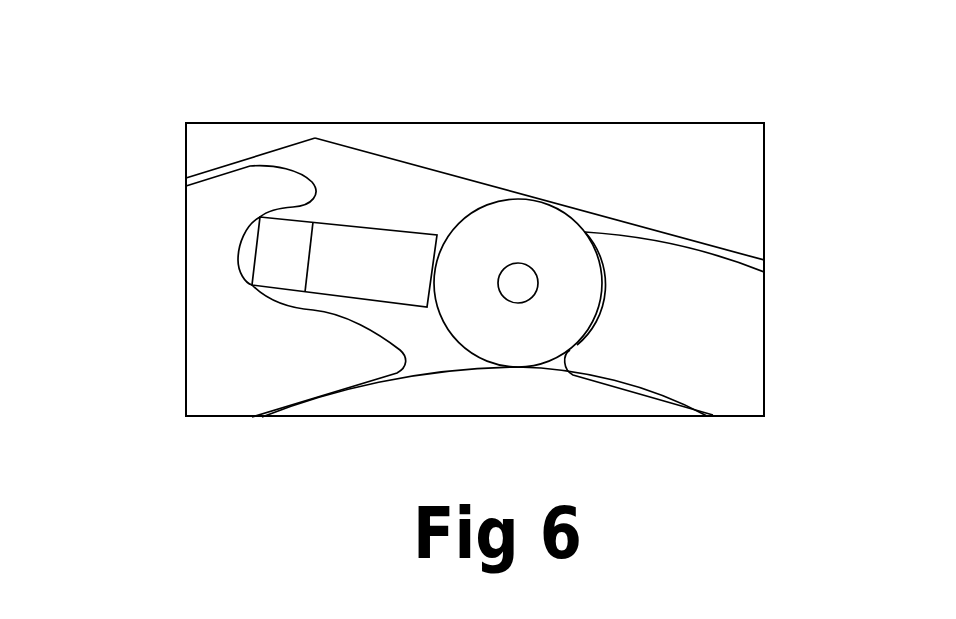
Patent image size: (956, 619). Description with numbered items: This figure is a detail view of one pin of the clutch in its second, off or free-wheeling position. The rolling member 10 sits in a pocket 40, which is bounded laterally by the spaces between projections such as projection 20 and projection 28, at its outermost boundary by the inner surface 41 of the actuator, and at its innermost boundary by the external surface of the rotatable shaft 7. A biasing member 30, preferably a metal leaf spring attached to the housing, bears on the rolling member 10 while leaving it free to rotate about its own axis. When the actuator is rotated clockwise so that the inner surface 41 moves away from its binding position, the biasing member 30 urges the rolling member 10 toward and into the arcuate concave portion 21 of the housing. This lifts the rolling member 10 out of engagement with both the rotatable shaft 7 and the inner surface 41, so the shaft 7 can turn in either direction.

The rotatable shaft 7 is at (600, 395).
The rolling member 10 is at (518, 283).
The projection 20 is at (700, 332).
The arcuate concave portion 21 is at (605, 290).
The projection 28 is at (232, 343).
The biasing member 30 is at (300, 257).
The pocket 40 is at (370, 190).
The inner surface 41 is at (452, 173).